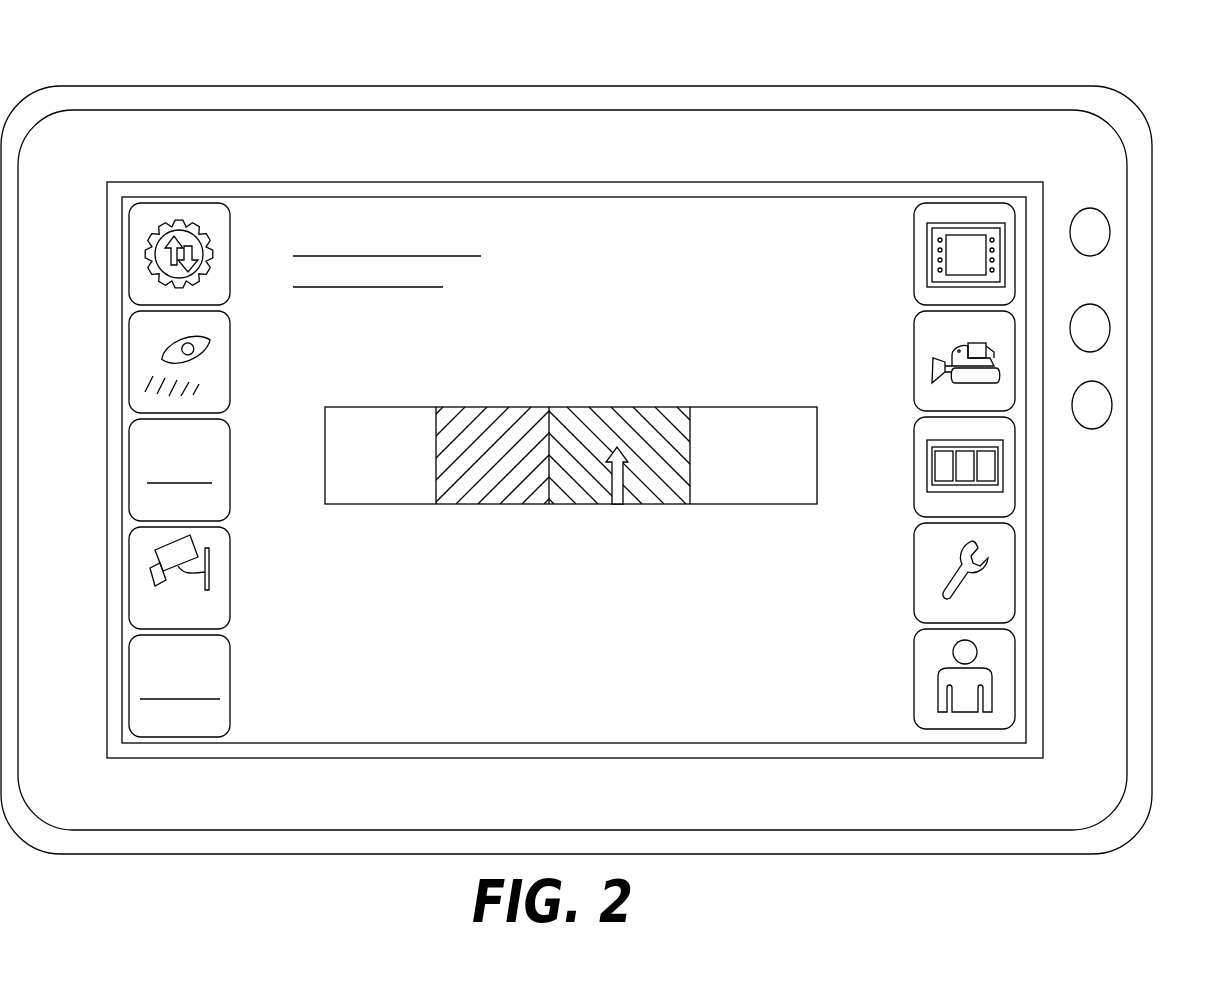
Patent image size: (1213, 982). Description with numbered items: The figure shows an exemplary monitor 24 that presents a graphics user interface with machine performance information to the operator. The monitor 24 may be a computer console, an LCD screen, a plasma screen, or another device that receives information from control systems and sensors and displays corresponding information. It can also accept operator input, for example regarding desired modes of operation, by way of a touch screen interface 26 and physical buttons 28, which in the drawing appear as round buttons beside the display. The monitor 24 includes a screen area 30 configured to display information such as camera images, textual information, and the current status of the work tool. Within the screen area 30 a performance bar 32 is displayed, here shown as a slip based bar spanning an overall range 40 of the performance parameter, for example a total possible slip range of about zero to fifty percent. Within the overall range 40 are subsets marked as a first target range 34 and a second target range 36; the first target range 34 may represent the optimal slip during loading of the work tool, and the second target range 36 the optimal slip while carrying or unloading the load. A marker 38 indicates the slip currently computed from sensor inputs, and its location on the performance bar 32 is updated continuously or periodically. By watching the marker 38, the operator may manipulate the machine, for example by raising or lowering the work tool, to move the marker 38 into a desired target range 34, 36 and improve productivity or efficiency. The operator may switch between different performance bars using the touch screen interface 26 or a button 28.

The monitor 24 is at (962, 72).
The touch screen interface 26 is at (158, 770).
The physical buttons 28 is at (1096, 196).
The screen area 30 is at (574, 676).
The performance bar 32 is at (345, 530).
The first target range 34 is at (622, 403).
The second target range 36 is at (488, 402).
The marker 38 is at (624, 474).
The overall range 40 is at (398, 379).